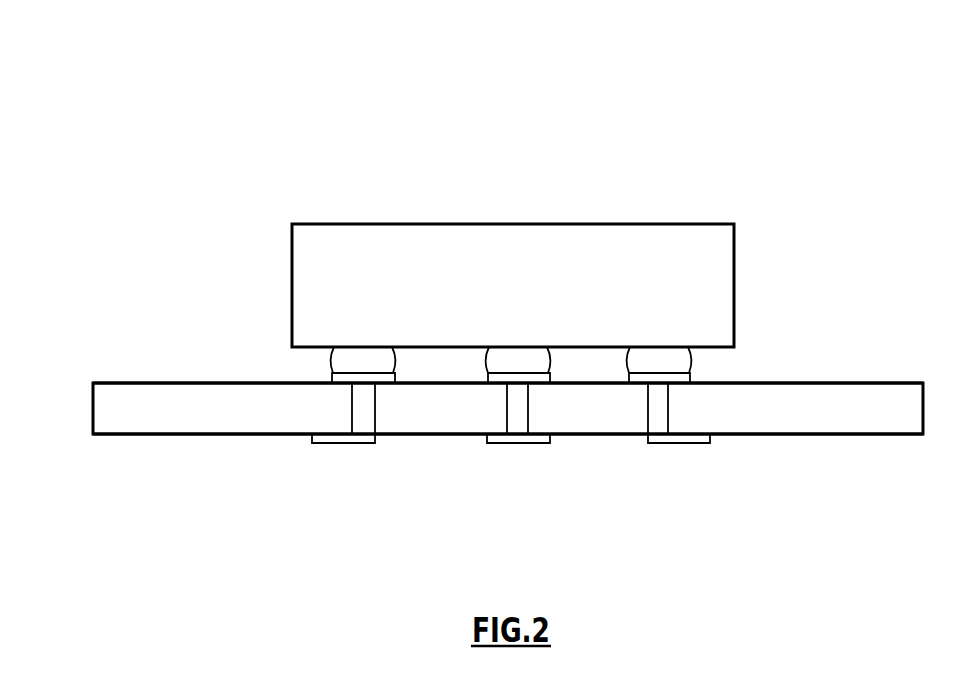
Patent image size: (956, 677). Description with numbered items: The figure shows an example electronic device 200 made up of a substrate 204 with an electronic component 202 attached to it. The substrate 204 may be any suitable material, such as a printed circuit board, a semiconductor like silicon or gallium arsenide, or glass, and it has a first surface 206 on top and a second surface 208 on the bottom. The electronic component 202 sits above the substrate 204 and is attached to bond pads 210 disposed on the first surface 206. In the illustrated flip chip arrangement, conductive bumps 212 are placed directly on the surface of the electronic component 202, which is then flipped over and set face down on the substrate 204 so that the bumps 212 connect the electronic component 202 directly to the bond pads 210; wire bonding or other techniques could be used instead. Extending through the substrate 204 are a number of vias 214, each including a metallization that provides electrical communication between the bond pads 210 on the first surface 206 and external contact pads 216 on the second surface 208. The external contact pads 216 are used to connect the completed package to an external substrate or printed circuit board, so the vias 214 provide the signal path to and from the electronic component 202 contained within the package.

The electronic device 200 is at (773, 134).
The electronic component 202 is at (536, 297).
The substrate 204 is at (233, 418).
The first surface 206 is at (121, 383).
The second surface 208 is at (246, 434).
The bond pads 210 is at (683, 386).
The bumps 212 is at (666, 363).
The vias 214 is at (520, 399).
The external contact pads 216 is at (536, 443).